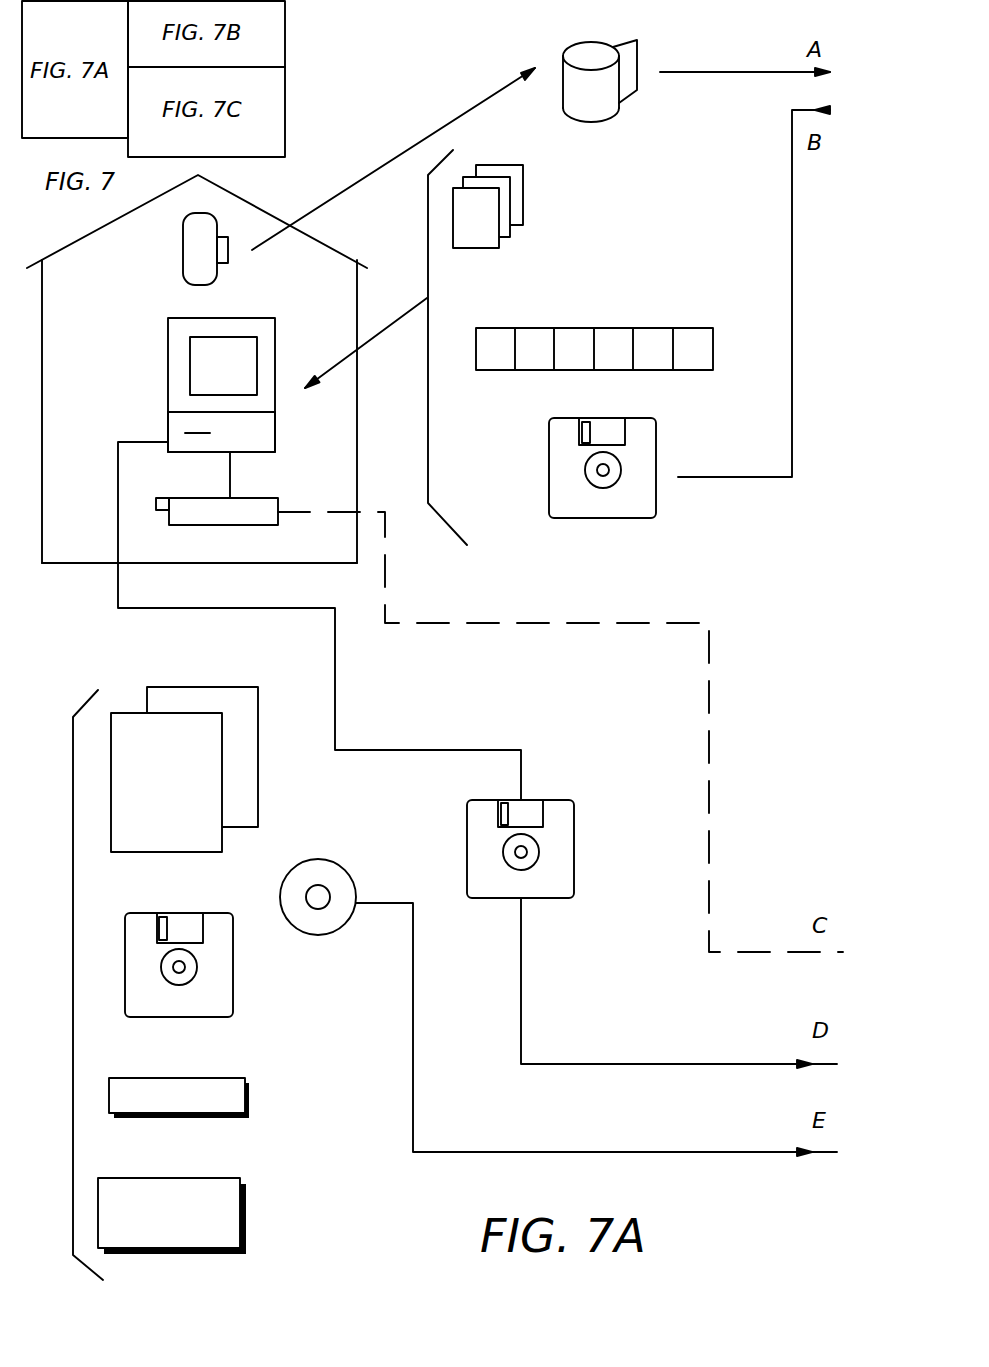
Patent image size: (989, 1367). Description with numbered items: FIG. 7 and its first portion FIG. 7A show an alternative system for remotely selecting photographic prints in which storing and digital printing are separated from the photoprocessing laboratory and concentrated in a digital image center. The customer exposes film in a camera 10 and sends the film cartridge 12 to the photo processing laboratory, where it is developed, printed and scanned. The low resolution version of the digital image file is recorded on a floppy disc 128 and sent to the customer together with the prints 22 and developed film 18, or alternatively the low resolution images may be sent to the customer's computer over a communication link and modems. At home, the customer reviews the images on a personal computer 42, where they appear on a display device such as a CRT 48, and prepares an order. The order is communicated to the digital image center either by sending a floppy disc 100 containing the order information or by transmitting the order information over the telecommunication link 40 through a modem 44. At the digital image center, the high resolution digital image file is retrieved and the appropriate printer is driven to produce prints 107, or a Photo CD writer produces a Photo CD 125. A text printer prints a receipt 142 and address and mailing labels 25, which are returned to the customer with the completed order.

The camera 10 is at (197, 235).
The film cassette 12 is at (600, 50).
The developed film 18 is at (535, 335).
The prints 22 is at (497, 170).
The address and mailing labels 25 is at (242, 1220).
The communication link 40 is at (710, 687).
The personal computer 42 is at (178, 427).
The modem 44 is at (262, 493).
The CRT 48 is at (168, 335).
The floppy disc 100 is at (563, 808).
The prints 107 is at (190, 697).
The Photo CD 125 is at (328, 877).
The floppy disc 128 is at (645, 448).
The receipt 142 is at (240, 1072).